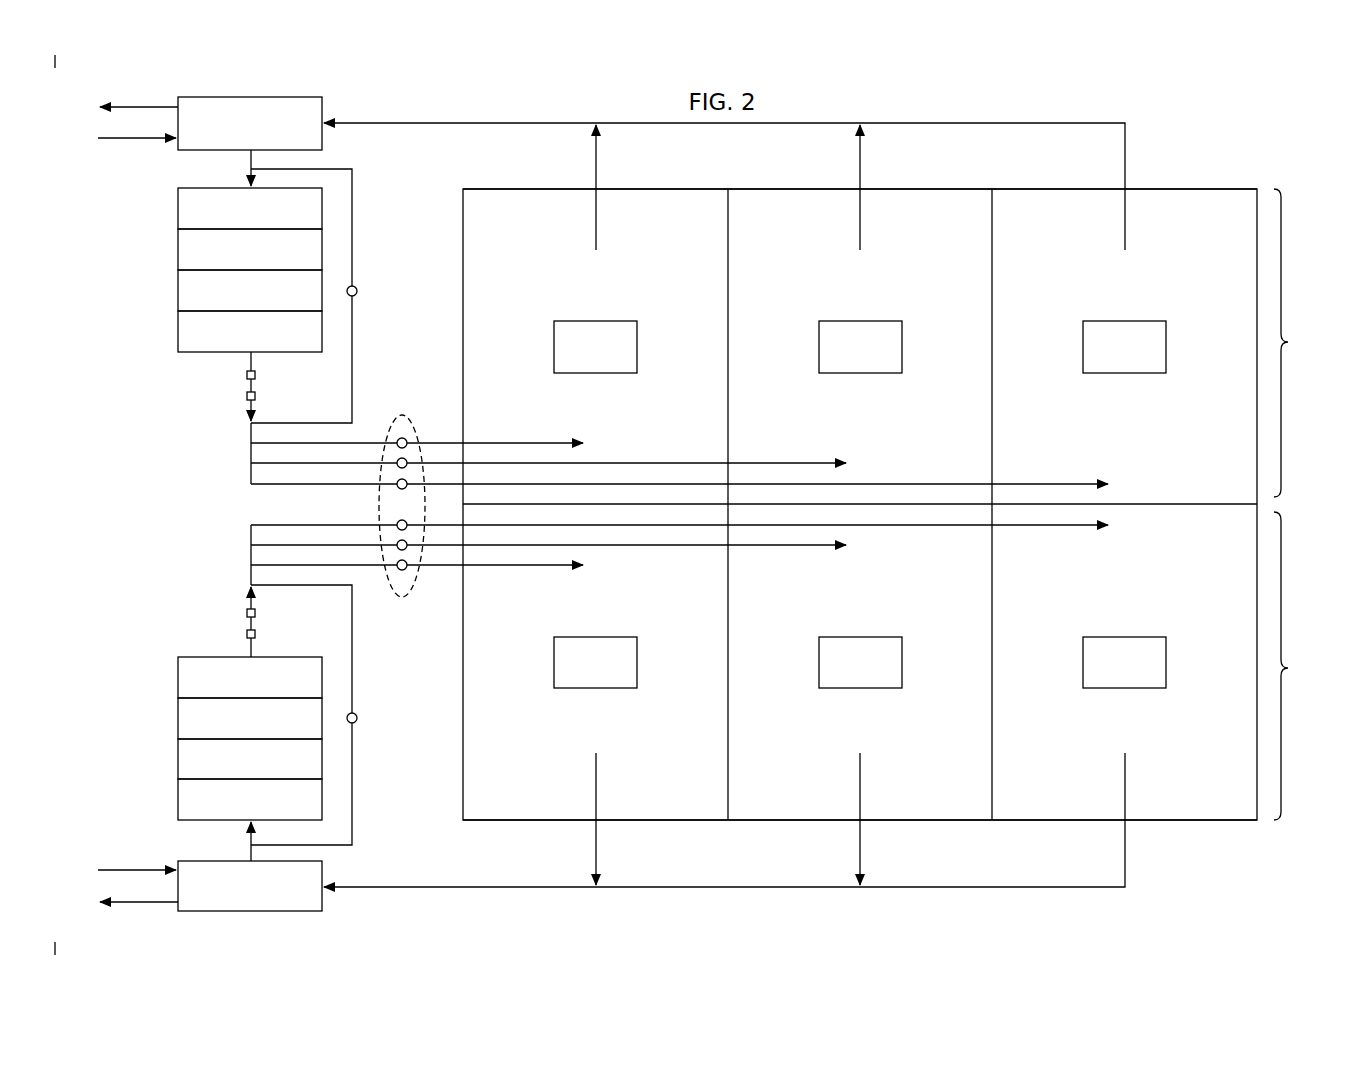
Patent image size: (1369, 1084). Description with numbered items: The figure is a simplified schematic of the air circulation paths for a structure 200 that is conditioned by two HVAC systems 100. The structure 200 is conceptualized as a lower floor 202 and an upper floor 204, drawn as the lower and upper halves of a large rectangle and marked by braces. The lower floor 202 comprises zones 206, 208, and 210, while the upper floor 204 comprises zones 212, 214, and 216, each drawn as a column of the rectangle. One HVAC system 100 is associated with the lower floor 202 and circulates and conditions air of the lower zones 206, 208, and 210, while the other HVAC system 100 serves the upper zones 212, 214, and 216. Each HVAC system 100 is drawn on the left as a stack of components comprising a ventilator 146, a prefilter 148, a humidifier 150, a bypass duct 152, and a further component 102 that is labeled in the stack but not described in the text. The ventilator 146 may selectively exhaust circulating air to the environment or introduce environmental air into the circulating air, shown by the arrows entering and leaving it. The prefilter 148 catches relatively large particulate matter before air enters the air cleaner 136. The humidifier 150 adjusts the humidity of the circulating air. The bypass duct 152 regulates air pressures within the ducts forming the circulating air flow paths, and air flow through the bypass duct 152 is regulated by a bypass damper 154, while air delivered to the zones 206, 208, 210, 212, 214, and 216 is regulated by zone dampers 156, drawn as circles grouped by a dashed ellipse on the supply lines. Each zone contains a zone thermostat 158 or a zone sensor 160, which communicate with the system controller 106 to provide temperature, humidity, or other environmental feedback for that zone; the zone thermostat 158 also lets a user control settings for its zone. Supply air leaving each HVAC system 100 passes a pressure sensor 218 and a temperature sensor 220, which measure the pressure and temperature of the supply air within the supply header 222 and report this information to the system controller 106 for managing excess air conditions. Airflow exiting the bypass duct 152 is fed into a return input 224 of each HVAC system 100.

The HVAC system 100 is at (135, 430).
The pump 102 is at (186, 293).
The system controller 106 is at (596, 321).
The air cleaner 136 is at (186, 761).
The ventilator 146 is at (322, 140).
The prefilter 148 is at (186, 214).
The humidifier 150 is at (186, 331).
The bypass duct 152 is at (352, 228).
The bypass damper 154 is at (357, 291).
The zone dampers 156 is at (186, 250).
The zone thermostat 158 is at (860, 321).
The zone sensor 160 is at (1125, 321).
The structure 200 is at (1230, 184).
The lower floor 202 is at (1303, 666).
The upper floor 204 is at (1303, 343).
The zone 206 is at (553, 812).
The zone 208 is at (902, 812).
The zone 210 is at (1166, 812).
The zone 212 is at (553, 195).
The zone 214 is at (903, 195).
The zone 216 is at (1064, 195).
The pressure sensor 218 is at (246, 376).
The temperature sensor 220 is at (256, 396).
The supply header 222 is at (249, 453).
The return input 224 is at (248, 160).